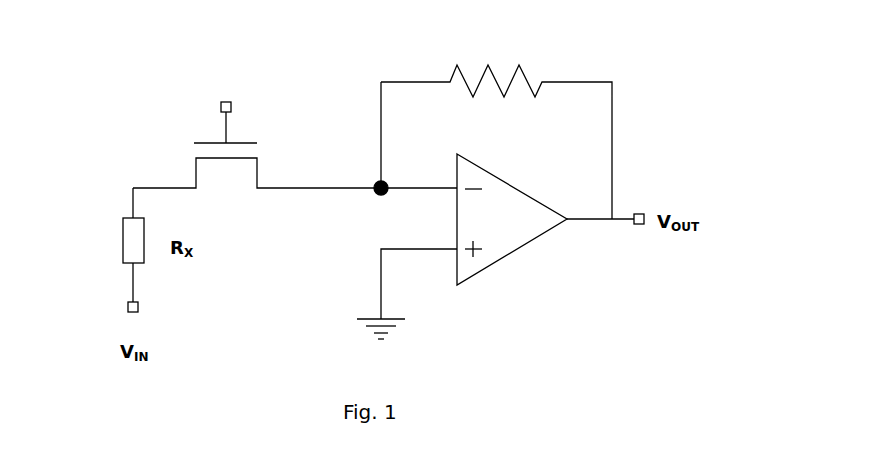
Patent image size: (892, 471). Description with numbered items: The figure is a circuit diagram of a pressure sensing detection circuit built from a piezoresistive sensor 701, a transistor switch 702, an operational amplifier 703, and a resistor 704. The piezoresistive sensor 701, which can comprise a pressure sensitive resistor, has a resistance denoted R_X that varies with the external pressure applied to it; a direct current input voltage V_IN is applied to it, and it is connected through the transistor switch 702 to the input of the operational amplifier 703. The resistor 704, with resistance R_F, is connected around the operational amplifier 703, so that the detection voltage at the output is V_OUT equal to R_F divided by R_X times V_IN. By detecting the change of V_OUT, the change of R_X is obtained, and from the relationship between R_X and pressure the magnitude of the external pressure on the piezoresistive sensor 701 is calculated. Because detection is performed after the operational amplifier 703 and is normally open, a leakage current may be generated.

The piezoresistive sensor 701 is at (112, 243).
The transistor switch 702 is at (250, 130).
The operational amplifier 703 is at (520, 267).
The resistor 704 is at (529, 62).